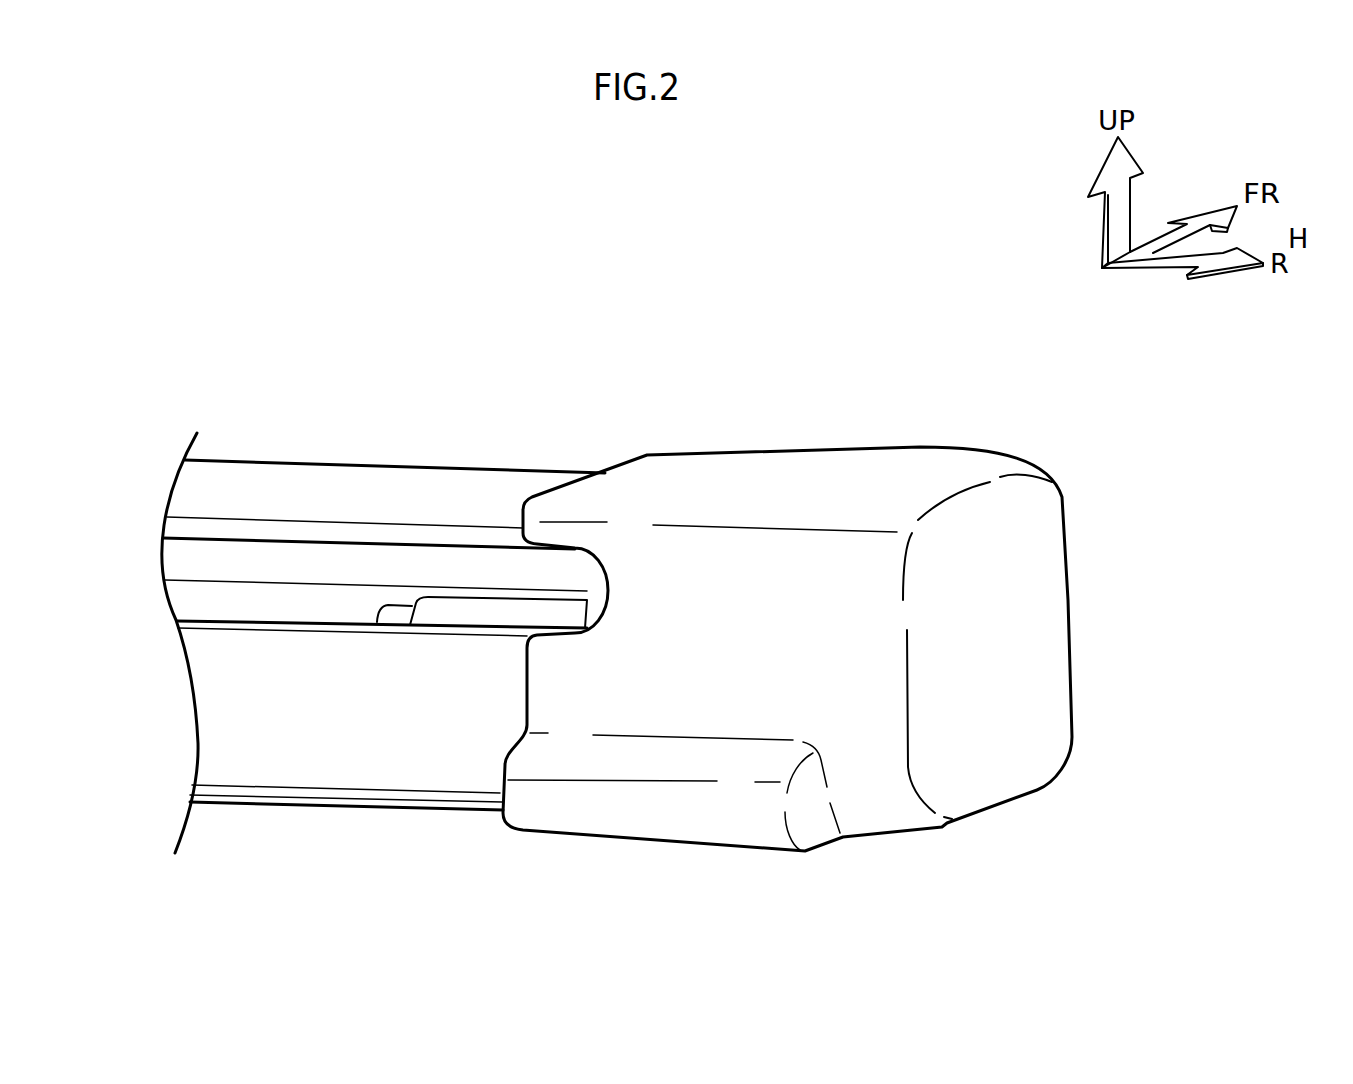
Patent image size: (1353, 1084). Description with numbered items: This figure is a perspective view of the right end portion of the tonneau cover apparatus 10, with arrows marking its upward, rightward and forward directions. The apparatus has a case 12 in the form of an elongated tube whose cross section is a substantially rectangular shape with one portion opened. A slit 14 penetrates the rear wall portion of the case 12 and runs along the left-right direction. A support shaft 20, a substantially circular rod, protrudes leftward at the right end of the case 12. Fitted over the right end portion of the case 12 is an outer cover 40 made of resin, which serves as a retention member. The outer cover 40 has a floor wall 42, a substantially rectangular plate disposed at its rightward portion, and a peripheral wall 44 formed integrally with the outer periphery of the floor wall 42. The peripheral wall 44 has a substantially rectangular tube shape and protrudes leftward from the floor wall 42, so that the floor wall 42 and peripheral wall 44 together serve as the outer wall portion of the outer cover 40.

The tonneau cover apparatus 10 is at (412, 342).
The case 12 is at (315, 462).
The slit 14 is at (195, 622).
The support shaft 20 is at (447, 598).
The outer cover 40 is at (850, 418).
The floor wall 42 is at (1045, 593).
The peripheral wall 44 is at (752, 452).